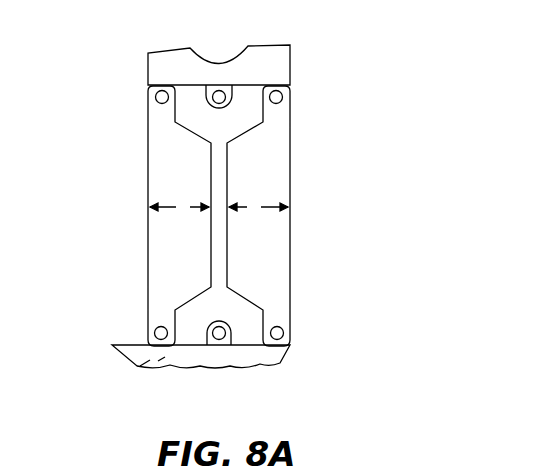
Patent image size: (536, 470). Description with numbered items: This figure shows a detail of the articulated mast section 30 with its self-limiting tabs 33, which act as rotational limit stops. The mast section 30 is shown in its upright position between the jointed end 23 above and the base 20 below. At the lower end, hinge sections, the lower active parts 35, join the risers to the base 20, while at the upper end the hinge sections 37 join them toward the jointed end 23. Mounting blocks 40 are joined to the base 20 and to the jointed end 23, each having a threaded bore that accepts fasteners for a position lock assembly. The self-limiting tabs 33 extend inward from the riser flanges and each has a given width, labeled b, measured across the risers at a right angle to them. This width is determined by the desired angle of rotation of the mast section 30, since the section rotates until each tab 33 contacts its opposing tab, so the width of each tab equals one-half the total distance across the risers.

The base 20 is at (157, 362).
The jointed end 23 is at (285, 65).
The mast section 30 is at (312, 222).
The self-limiting tabs 33 is at (183, 147).
The lower active parts 35 is at (150, 337).
The hinge sections 37 is at (148, 95).
The mounting blocks 40 is at (205, 99).